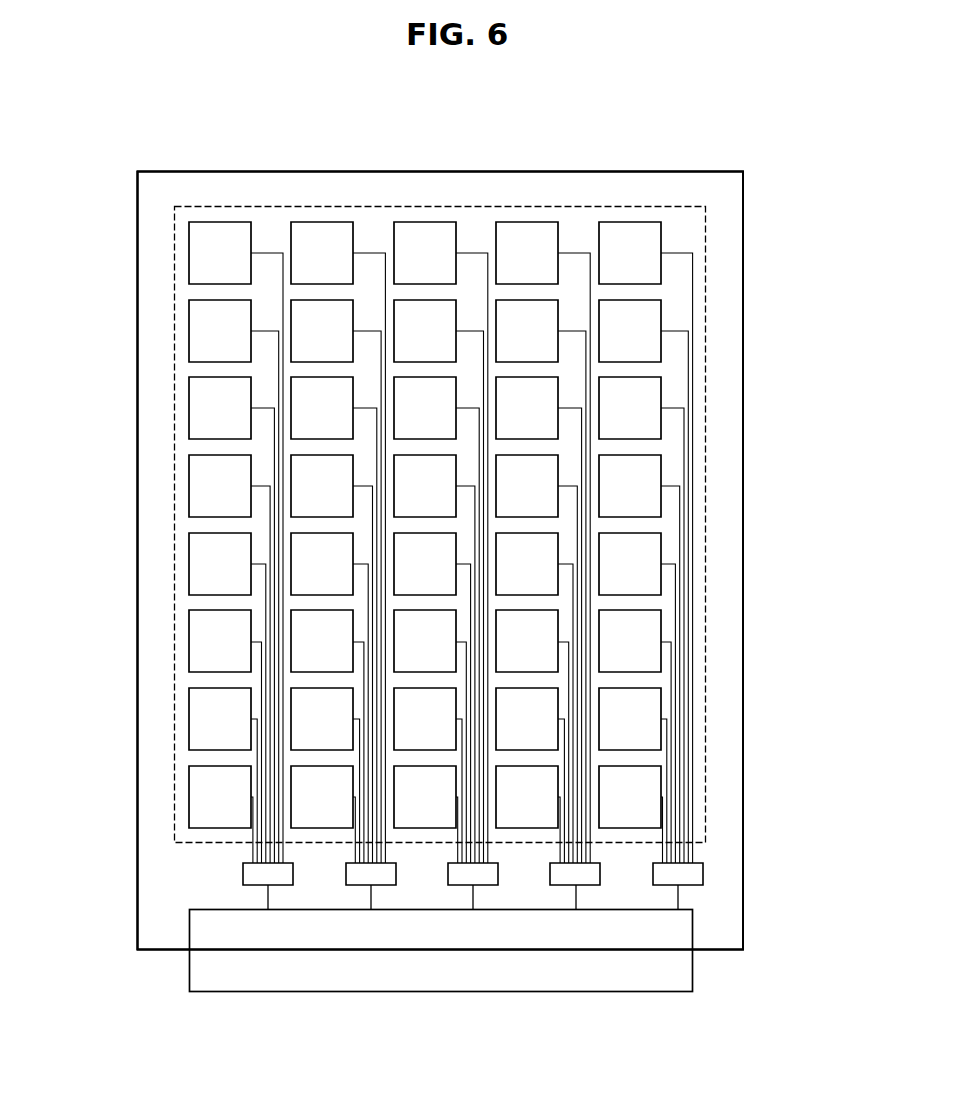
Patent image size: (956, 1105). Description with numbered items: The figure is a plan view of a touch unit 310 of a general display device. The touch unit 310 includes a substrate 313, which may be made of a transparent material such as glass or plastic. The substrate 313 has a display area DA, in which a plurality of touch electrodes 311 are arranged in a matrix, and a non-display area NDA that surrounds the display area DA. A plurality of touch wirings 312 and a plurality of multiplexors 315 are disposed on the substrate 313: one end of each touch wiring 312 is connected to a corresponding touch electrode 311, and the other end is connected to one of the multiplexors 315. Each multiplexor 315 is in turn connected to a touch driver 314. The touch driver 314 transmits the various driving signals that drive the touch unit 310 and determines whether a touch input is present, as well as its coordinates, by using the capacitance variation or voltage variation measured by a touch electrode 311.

The touch unit 310 is at (595, 147).
The touch electrodes 311 is at (189, 251).
The touch wirings 312 is at (265, 253).
The substrate 313 is at (693, 171).
The touch driver 314 is at (448, 972).
The multiplexors (MUXes) 315 is at (703, 870).
The display area DA is at (682, 229).
The non-display area NDA is at (724, 286).